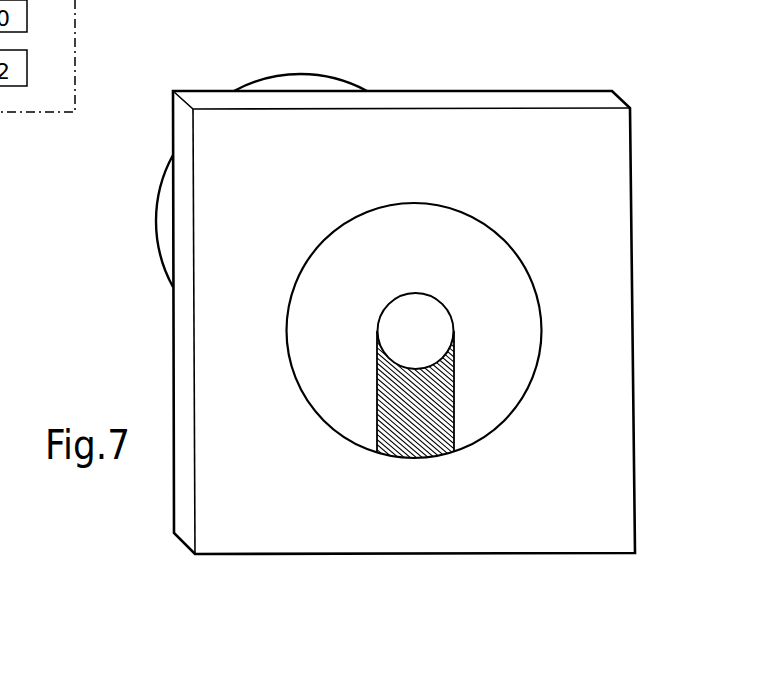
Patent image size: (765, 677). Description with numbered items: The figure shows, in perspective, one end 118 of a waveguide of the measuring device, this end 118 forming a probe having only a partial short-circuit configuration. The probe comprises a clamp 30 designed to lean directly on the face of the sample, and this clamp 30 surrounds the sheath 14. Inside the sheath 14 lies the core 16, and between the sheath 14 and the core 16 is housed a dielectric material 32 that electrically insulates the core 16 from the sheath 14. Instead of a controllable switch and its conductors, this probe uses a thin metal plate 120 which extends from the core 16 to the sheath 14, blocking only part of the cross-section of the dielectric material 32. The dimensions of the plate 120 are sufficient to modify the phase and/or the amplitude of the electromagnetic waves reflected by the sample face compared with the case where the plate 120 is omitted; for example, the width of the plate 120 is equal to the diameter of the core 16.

The end 118 is at (404, 308).
The clamp 30 is at (250, 540).
The sheath 14 is at (278, 84).
The dielectric material 32 is at (535, 318).
The core 16 is at (383, 325).
The thin metal plate 120 is at (443, 425).